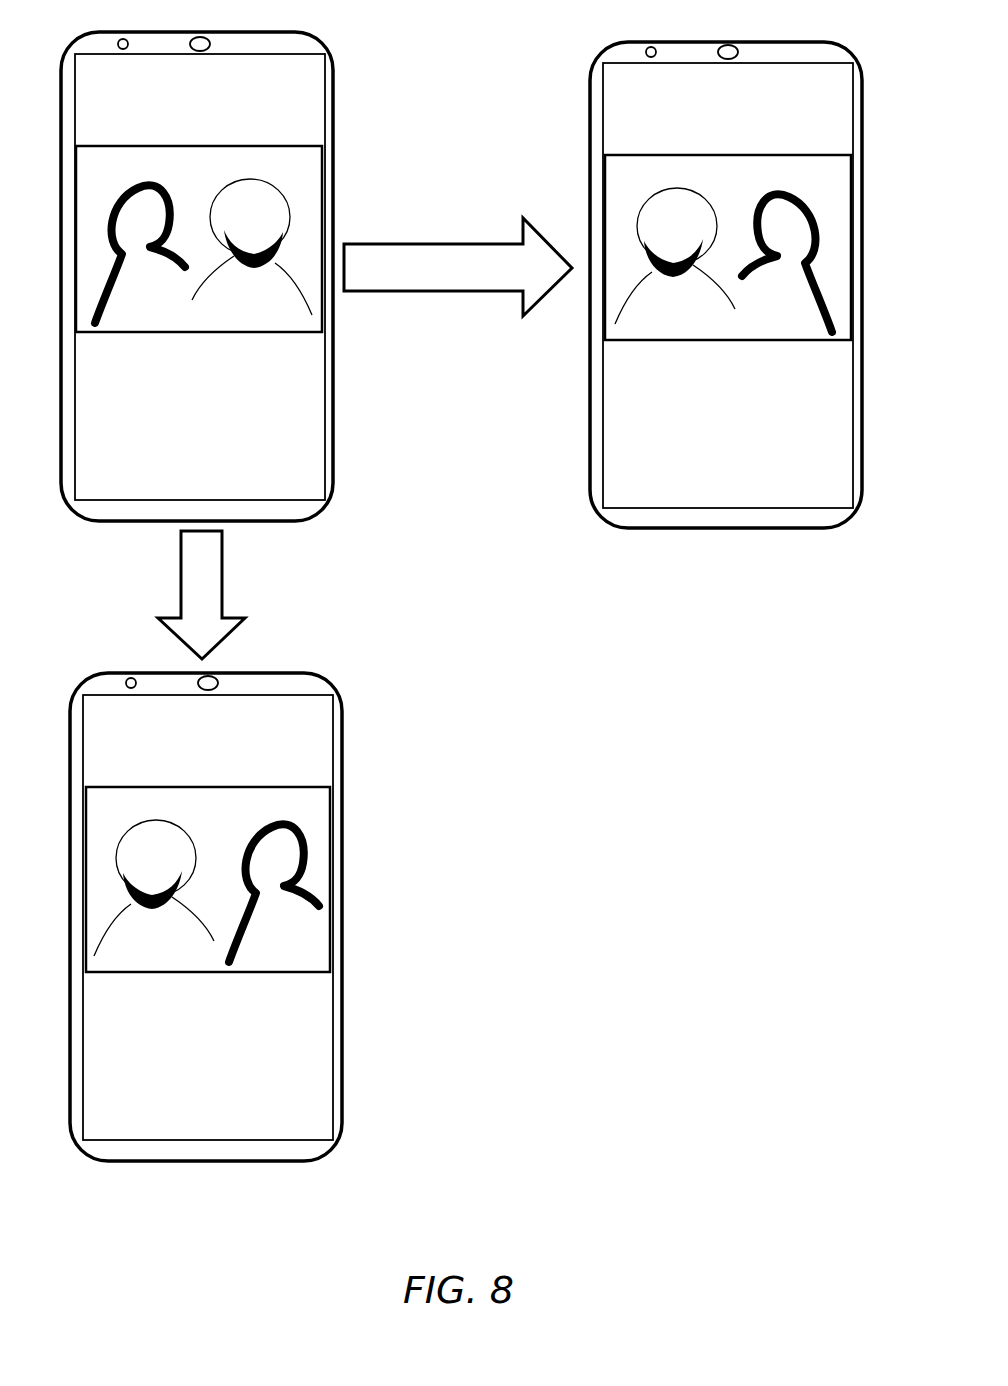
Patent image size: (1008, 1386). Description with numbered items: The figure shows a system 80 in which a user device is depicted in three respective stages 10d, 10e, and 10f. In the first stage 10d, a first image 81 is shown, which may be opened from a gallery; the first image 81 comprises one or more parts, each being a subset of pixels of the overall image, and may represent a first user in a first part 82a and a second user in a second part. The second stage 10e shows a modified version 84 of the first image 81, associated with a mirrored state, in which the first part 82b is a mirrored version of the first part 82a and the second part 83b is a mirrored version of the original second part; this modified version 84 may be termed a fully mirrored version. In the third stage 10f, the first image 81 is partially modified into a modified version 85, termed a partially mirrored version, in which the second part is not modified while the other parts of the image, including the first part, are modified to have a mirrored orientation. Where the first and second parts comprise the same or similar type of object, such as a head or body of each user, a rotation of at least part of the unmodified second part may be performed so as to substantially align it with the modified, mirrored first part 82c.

The first stage 10d is at (333, 105).
The second stage 10e is at (738, 530).
The third stage 10f is at (310, 672).
The system 80 is at (640, 848).
The first image 81 is at (310, 207).
The first part 82a is at (267, 200).
The first part 82b is at (695, 210).
The first part 82c is at (170, 840).
The second part 83b is at (802, 212).
The modified version 84 is at (620, 228).
The modified version 85 is at (315, 858).